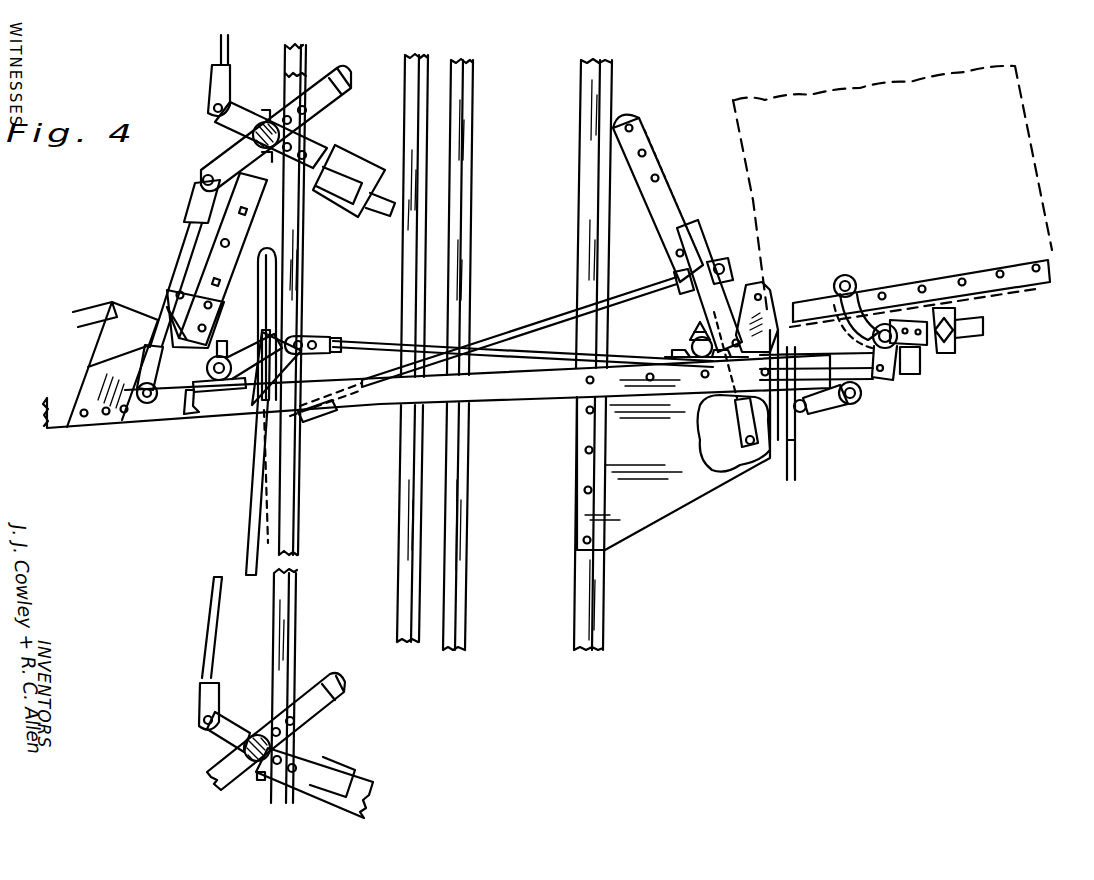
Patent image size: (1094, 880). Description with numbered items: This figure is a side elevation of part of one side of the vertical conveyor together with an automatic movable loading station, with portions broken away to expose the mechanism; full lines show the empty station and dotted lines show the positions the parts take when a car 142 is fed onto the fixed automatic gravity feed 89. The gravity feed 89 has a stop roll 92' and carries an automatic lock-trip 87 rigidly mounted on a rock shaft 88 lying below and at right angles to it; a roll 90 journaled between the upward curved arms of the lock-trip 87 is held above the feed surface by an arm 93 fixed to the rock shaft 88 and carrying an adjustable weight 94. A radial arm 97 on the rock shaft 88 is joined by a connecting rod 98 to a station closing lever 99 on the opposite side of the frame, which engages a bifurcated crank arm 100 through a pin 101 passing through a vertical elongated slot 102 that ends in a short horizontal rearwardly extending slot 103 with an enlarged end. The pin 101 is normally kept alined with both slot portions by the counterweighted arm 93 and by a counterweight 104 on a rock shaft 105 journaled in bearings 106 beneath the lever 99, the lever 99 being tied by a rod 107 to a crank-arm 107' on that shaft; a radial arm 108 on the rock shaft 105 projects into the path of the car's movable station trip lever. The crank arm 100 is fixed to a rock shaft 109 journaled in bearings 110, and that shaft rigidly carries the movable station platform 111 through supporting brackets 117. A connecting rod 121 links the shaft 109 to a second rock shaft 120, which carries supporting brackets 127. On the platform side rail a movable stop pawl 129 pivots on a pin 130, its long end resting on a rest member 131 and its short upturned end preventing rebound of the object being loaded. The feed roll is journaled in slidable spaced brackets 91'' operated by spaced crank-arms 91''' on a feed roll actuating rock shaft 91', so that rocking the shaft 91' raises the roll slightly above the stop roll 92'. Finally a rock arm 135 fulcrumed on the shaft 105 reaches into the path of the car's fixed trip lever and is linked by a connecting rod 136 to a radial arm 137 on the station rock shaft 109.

The automatic lock-trip 87 is at (860, 304).
The rock shaft 88 is at (920, 362).
The fixed automatic gravity feed 89 is at (1010, 285).
The roll 90 is at (845, 275).
The feed roll actuating rock shaft 91' is at (846, 411).
The slidable spaced brackets 91'' is at (813, 415).
The spaced crank-arms 91''' is at (827, 423).
The stop roll 92' is at (757, 301).
The arm 93 is at (978, 320).
The weight 94 is at (958, 345).
The radial arm 97 is at (890, 372).
The connecting rod 98 is at (470, 347).
The station closing lever 99 is at (300, 358).
The bifurcated crank arm 100 is at (255, 405).
The pin 101 is at (292, 332).
The vertical elongated slot 102 is at (270, 250).
The short horizontal rearwardly extending slot 103 is at (260, 332).
The counterweight 104 is at (375, 795).
The rock shaft 105 is at (243, 750).
The bearings 106 is at (262, 781).
The rod 107 is at (200, 539).
The crank-arm 107' is at (236, 715).
The radial arm 108 is at (310, 774).
The rock shaft 109 is at (226, 390).
The bearings 110 is at (185, 405).
The movable station platform 111 is at (235, 258).
The supporting brackets 117 is at (222, 341).
The rock shaft 120 is at (690, 346).
The connecting rod 121 is at (545, 325).
The supporting brackets 127 is at (692, 333).
The movable stop pawl 129 is at (697, 238).
The pin 130 is at (678, 262).
The rest member 131 is at (698, 283).
The rock arm 135 is at (331, 95).
The connecting rod 136 is at (188, 235).
The radial arm 137 is at (148, 404).
The car 142 is at (935, 178).